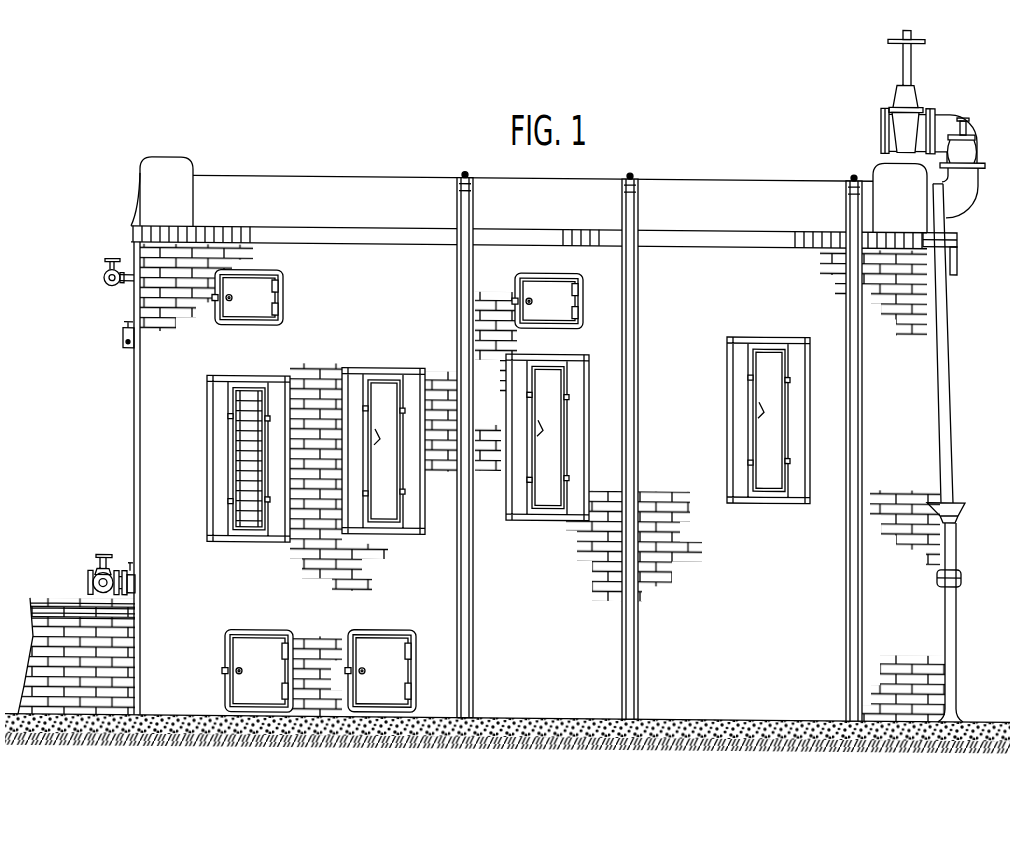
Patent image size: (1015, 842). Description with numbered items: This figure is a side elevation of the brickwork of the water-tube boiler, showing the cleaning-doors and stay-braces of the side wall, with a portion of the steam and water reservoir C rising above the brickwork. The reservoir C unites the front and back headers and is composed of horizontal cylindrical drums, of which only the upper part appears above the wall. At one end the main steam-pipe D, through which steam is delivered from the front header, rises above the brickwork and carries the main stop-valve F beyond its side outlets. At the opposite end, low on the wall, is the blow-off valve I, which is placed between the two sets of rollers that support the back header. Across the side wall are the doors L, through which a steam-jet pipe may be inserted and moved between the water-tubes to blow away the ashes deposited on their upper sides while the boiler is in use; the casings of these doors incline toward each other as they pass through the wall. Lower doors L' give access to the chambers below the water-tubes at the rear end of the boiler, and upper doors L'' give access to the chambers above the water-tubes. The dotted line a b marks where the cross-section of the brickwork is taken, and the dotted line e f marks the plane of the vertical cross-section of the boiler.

The section line a b a is at (898, 483).
The section line a b is at (898, 483).
The steam and water reservoir C is at (529, 203).
The main steam-pipe D is at (959, 166).
The section line e f e is at (250, 575).
The section line e f is at (250, 575).
The main stop-valve F is at (908, 91).
The blow-off valve I is at (88, 586).
The cleaning-doors L is at (508, 452).
The lower doors L' is at (319, 671).
The upper doors L'' is at (397, 298).